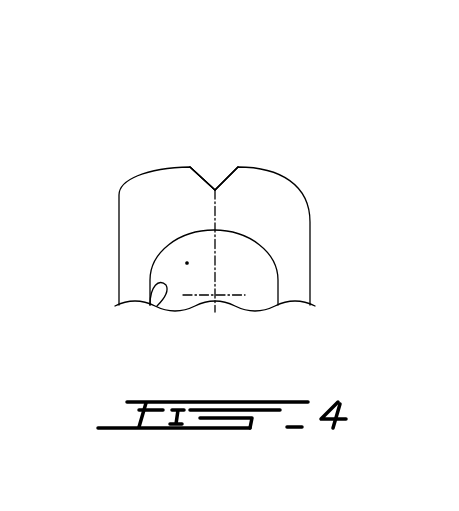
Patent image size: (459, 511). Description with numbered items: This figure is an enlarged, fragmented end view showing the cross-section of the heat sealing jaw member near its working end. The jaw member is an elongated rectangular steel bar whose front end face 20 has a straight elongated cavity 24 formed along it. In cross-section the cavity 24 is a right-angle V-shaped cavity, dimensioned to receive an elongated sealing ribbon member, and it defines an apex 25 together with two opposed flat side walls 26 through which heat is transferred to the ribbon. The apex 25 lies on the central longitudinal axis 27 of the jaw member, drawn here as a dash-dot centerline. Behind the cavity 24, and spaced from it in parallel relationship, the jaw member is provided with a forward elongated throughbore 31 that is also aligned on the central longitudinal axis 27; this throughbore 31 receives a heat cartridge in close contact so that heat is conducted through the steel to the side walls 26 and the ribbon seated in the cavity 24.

The end face 20 is at (153, 170).
The elongated cavity 24 is at (215, 147).
The apex 25 is at (216, 190).
The flat side walls 26 is at (206, 179).
The central longitudinal axis 27 is at (216, 271).
The forward elongated throughbore 31 is at (120, 306).